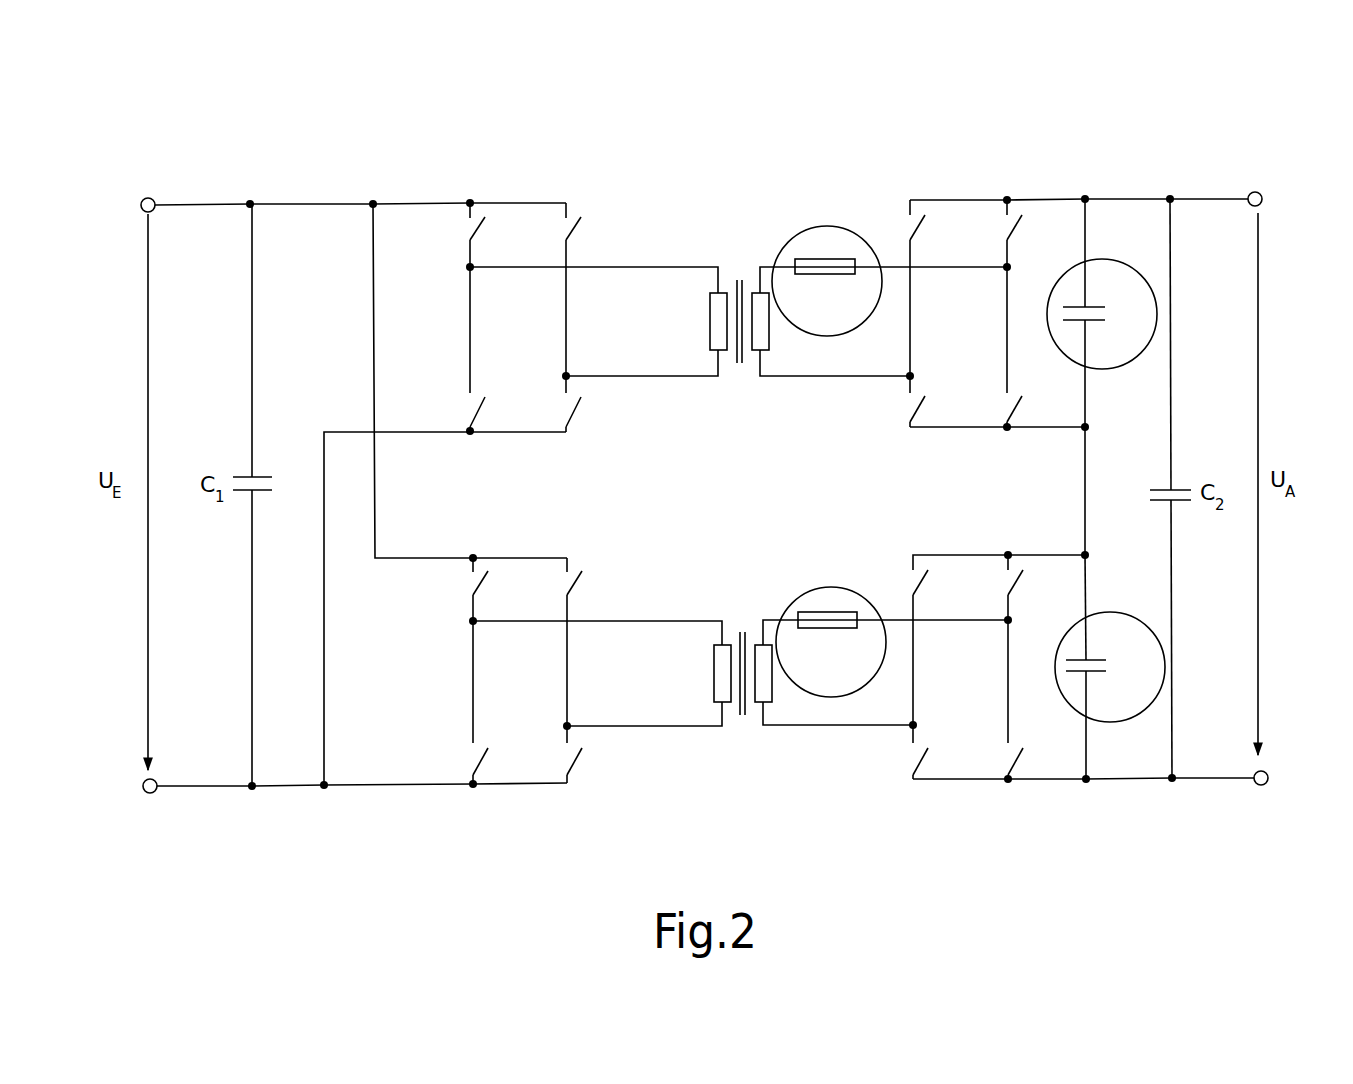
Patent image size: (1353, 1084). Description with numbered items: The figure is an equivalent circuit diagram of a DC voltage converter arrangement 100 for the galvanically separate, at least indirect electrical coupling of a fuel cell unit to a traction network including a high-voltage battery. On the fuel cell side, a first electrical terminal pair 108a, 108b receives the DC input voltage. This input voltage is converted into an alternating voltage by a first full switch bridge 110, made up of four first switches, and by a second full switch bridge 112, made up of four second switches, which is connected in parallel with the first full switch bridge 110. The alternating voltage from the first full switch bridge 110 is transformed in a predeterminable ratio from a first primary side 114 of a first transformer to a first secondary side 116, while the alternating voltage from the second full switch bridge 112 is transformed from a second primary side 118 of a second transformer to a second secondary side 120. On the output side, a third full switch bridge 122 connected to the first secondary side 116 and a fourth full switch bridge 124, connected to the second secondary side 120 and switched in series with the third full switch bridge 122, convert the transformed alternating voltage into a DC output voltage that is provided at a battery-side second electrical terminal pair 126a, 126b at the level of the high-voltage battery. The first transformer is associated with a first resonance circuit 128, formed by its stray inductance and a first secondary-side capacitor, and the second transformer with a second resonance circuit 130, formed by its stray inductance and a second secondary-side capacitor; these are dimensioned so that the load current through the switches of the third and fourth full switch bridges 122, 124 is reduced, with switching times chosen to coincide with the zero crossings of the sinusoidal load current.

The DC voltage converter arrangement 100 is at (741, 135).
The first electrical terminal pair 108a is at (145, 197).
The first electrical terminal pair 108b is at (152, 794).
The first full switch bridge 110 is at (559, 190).
The second full switch bridge 112 is at (573, 795).
The first primary side 114 is at (694, 250).
The first secondary side 116 is at (768, 250).
The second primary side 118 is at (695, 600).
The second secondary side 120 is at (765, 598).
The third full switch bridge 122 is at (1009, 440).
The fourth full switch bridge 124 is at (937, 542).
The second electrical terminal pair 126a is at (1258, 191).
The second electrical terminal pair 126b is at (1263, 786).
The first resonance circuit 128 is at (836, 228).
The second resonance circuit 130 is at (838, 697).